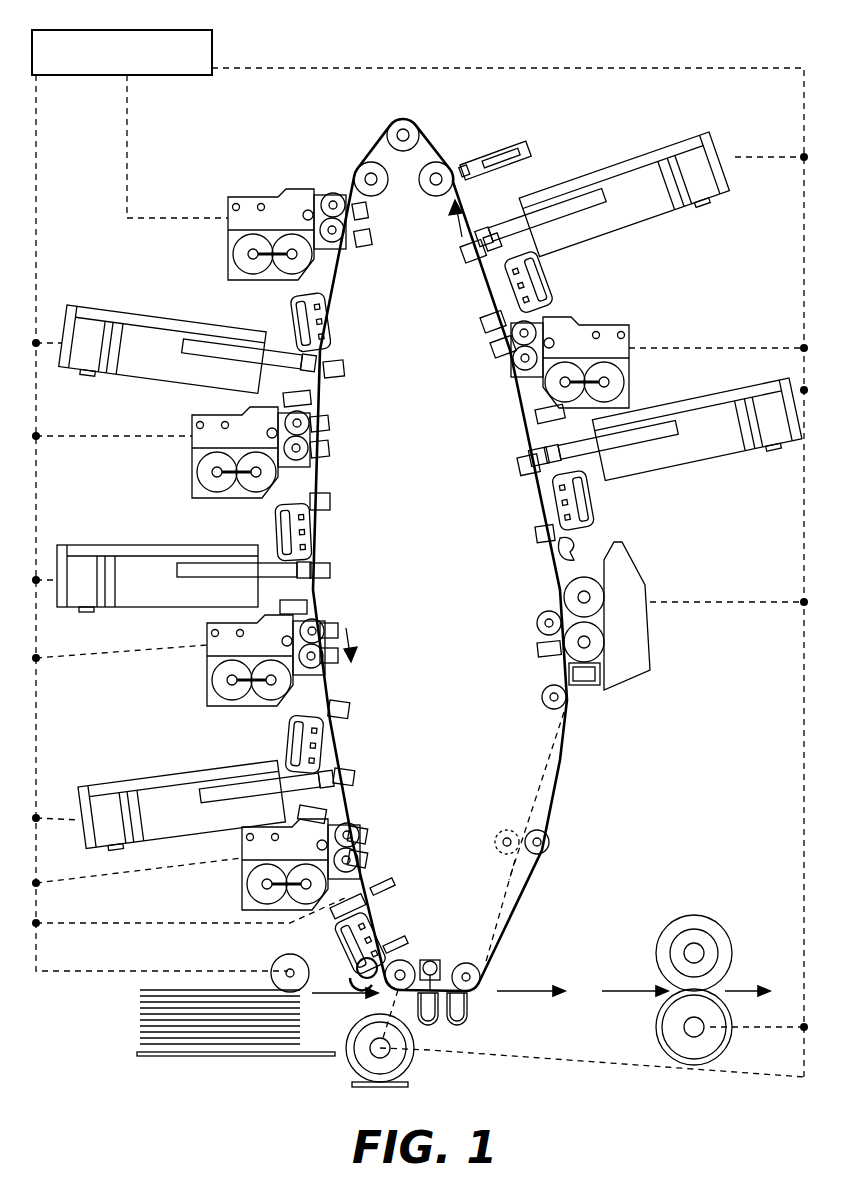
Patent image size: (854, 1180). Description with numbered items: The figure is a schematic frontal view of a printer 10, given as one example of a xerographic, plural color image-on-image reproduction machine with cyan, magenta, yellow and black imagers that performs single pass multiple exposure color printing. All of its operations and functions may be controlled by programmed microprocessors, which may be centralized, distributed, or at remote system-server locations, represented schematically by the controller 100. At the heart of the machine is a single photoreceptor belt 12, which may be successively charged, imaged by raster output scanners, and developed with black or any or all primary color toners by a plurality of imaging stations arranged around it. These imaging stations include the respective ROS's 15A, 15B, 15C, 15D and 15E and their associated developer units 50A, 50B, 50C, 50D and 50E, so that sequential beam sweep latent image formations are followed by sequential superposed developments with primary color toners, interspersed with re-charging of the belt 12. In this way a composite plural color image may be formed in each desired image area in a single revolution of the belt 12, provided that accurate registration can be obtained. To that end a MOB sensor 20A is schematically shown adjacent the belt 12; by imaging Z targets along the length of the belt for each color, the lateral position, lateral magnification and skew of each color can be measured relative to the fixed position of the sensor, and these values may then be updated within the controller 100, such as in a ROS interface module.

The printer 10 is at (512, 68).
The photoreceptor belt 12 is at (527, 893).
The ROS 15A is at (105, 782).
The ROS 15B is at (107, 548).
The ROS 15C is at (118, 300).
The ROS 15D is at (597, 176).
The ROS 15E is at (675, 406).
The MOB sensor 20A is at (370, 880).
The developer unit 50A is at (278, 911).
The developer unit 50B is at (230, 707).
The developer unit 50C is at (228, 500).
The developer unit 50D is at (245, 282).
The developer unit 50E is at (628, 330).
The controller 100 is at (212, 45).